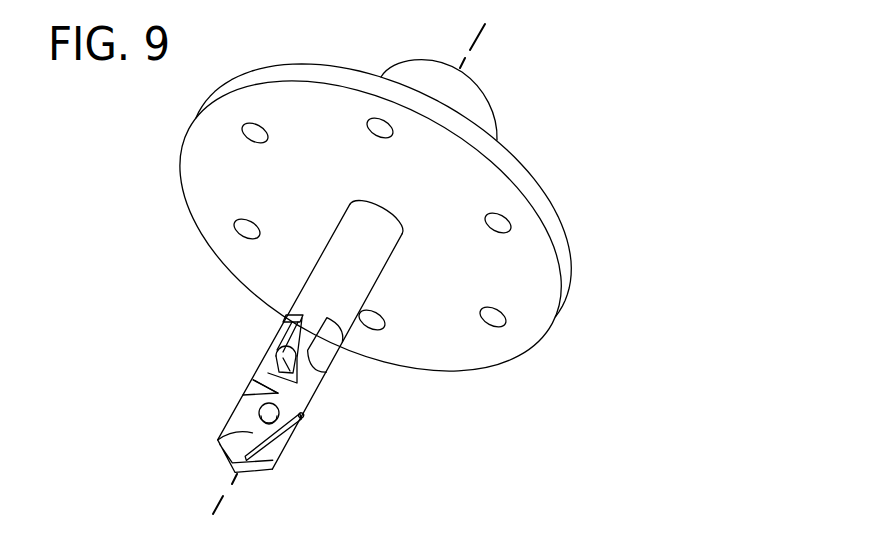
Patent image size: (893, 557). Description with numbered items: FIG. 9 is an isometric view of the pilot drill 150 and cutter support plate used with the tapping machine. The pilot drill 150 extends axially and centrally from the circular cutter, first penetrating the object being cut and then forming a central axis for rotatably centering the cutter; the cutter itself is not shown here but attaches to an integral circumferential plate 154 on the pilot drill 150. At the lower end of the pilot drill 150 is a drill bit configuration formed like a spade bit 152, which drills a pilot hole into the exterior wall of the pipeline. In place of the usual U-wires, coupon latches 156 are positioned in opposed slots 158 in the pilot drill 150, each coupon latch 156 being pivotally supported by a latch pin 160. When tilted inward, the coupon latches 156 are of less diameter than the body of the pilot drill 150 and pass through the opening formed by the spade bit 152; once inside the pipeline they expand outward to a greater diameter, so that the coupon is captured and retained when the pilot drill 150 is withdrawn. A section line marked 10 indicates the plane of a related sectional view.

The section line 10- 10 is at (466, 38).
The pilot drill 150 is at (368, 277).
The spade bit 152 is at (257, 474).
The circumferential plate 154 is at (212, 180).
The coupon latch 156 is at (286, 328).
The slot 158 is at (300, 320).
The latch pin 160 is at (307, 352).